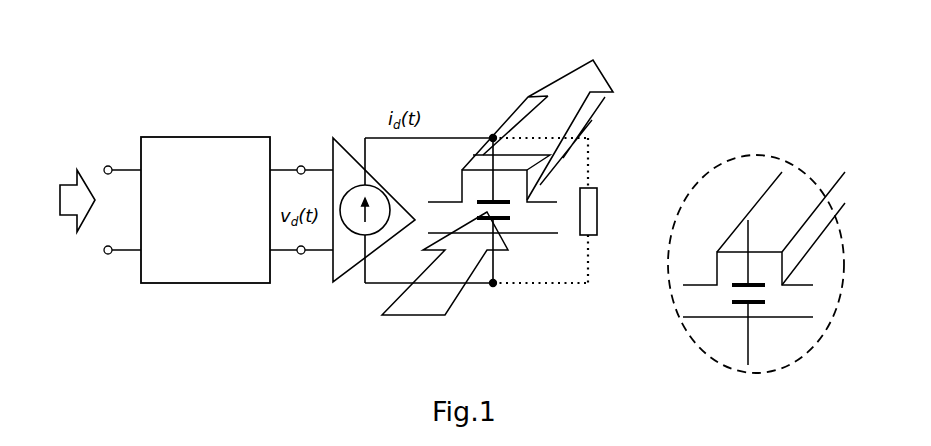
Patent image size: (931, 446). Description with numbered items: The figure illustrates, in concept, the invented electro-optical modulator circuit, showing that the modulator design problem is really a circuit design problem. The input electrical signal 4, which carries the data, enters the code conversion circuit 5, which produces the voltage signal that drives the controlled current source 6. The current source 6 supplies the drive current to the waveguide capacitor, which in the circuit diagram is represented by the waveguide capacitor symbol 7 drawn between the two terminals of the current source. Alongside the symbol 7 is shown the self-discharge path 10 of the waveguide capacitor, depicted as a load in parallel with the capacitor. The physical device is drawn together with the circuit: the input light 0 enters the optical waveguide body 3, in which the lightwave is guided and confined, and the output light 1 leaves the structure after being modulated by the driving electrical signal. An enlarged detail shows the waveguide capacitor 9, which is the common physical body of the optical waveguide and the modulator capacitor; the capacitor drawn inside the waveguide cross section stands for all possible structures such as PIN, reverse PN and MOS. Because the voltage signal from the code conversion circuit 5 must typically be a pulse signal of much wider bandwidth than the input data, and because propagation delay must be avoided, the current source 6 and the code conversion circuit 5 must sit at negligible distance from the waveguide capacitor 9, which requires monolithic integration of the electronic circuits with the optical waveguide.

The input light 0 is at (416, 324).
The output light 1 is at (588, 66).
The optical waveguide body 3 is at (563, 179).
The input electrical signal 4 is at (59, 201).
The code conversion circuit 5 is at (214, 149).
The controlled current source 6 is at (355, 161).
The waveguide capacitor symbol 7 is at (511, 227).
The waveguide capacitor 9 is at (850, 268).
The self-discharge path 10 is at (599, 213).